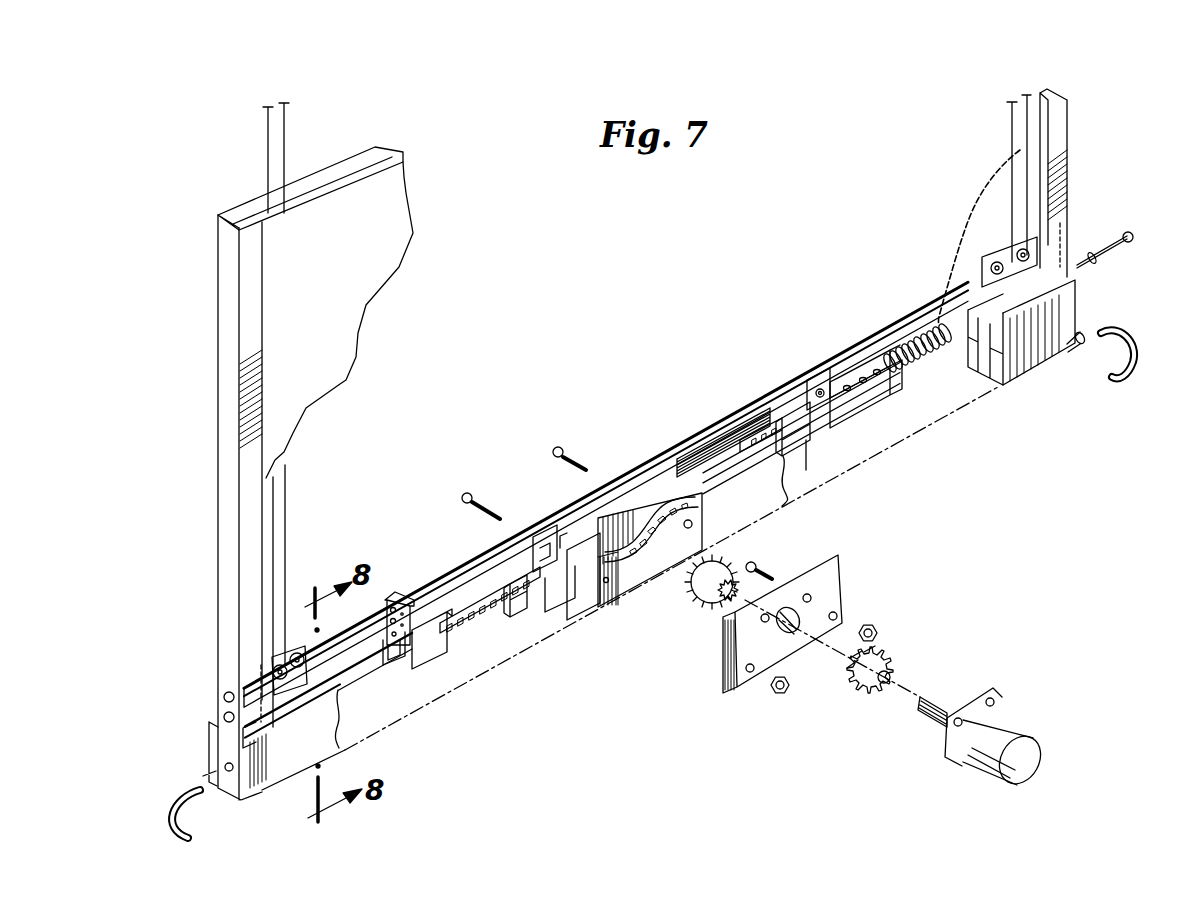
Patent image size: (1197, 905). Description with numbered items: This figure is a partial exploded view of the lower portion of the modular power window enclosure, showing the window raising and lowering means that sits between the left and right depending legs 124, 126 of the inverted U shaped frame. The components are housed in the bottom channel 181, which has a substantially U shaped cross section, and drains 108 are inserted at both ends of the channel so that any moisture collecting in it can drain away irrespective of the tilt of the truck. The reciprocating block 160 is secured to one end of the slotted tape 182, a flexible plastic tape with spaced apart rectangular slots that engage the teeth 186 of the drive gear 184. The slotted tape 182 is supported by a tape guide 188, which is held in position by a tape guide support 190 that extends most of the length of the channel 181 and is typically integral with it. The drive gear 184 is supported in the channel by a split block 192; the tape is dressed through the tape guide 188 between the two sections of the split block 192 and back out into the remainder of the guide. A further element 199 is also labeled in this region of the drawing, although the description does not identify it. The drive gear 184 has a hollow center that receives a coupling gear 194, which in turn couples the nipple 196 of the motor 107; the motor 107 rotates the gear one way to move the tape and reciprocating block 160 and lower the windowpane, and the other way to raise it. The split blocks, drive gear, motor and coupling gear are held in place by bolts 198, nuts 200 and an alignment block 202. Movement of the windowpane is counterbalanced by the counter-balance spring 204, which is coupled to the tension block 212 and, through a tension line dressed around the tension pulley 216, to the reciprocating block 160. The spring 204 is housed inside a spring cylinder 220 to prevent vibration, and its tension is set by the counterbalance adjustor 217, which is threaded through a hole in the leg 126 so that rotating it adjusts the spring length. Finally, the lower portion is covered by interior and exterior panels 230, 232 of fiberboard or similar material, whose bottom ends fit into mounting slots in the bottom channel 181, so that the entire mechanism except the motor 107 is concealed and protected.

The motor 107 is at (1020, 730).
The drains 108 is at (197, 792).
The left depending leg 124 is at (246, 548).
The right depending leg 126 is at (1060, 150).
The reciprocating block 160 is at (430, 658).
The bottom channel 181 is at (262, 787).
The slotted tape 182 is at (463, 632).
The drive gear 184 is at (763, 567).
The teeth 186 is at (687, 578).
The tape guide 188 is at (532, 612).
The tape guide support 190 is at (973, 363).
The split block 192 is at (676, 495).
The coupling gear 194 is at (888, 658).
The nipple 196 is at (938, 700).
The bolts 198 is at (570, 460).
The drive belt 199 is at (660, 445).
The nuts 200 is at (875, 625).
The alignment block 202 is at (843, 584).
The counter-balance spring 204 is at (925, 373).
The tension block 212 is at (873, 410).
The tension pulley 216 is at (810, 380).
The counterbalance adjustor 217 is at (1096, 258).
The spring cylinder 220 is at (892, 352).
The interior panel 230 is at (343, 163).
The exterior panel 232 is at (388, 202).